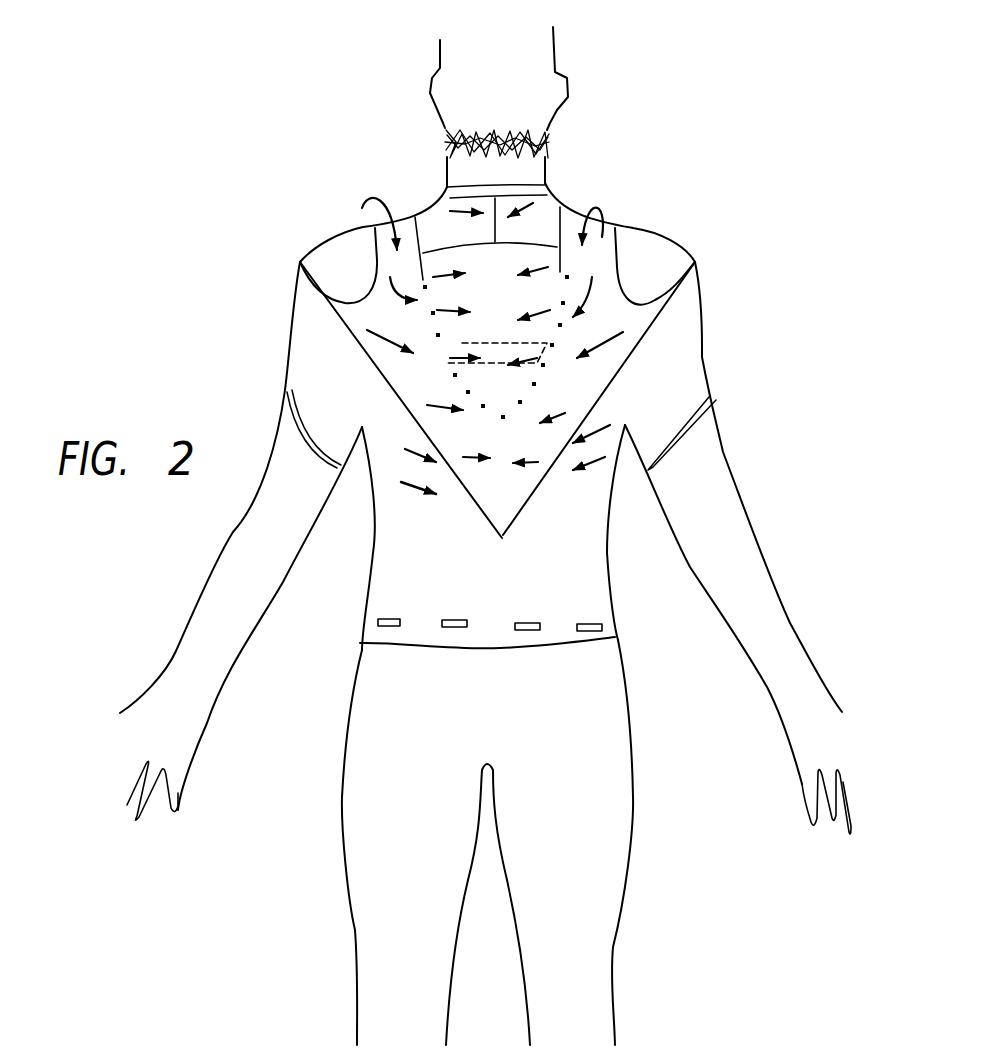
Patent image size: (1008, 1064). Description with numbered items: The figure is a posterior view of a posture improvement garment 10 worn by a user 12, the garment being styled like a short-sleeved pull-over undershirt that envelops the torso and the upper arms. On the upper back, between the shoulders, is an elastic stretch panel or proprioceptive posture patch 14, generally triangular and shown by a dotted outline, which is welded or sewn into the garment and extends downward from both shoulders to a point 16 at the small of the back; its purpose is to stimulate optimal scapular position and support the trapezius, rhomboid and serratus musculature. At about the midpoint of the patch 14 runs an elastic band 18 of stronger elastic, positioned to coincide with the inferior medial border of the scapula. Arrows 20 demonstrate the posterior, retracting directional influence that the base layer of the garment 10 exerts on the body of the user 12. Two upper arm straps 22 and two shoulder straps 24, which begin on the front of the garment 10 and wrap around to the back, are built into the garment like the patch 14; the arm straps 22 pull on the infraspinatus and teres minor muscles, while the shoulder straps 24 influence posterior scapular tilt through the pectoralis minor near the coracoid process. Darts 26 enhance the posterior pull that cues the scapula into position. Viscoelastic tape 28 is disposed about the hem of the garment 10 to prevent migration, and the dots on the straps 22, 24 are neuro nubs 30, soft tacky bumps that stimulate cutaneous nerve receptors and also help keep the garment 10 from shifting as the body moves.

The posture improvement garment 10 is at (690, 367).
The user 12 is at (417, 82).
The proprioceptive posture patch 14 is at (537, 262).
The point 16 is at (503, 535).
The elastic band 18 is at (462, 343).
The arrows 20 is at (407, 450).
The upper arm straps 22 is at (330, 300).
The shoulder straps 24 is at (407, 240).
The darts 26 is at (496, 200).
The viscoelastic tape 28 is at (577, 625).
The neuro nubs 30 is at (540, 378).